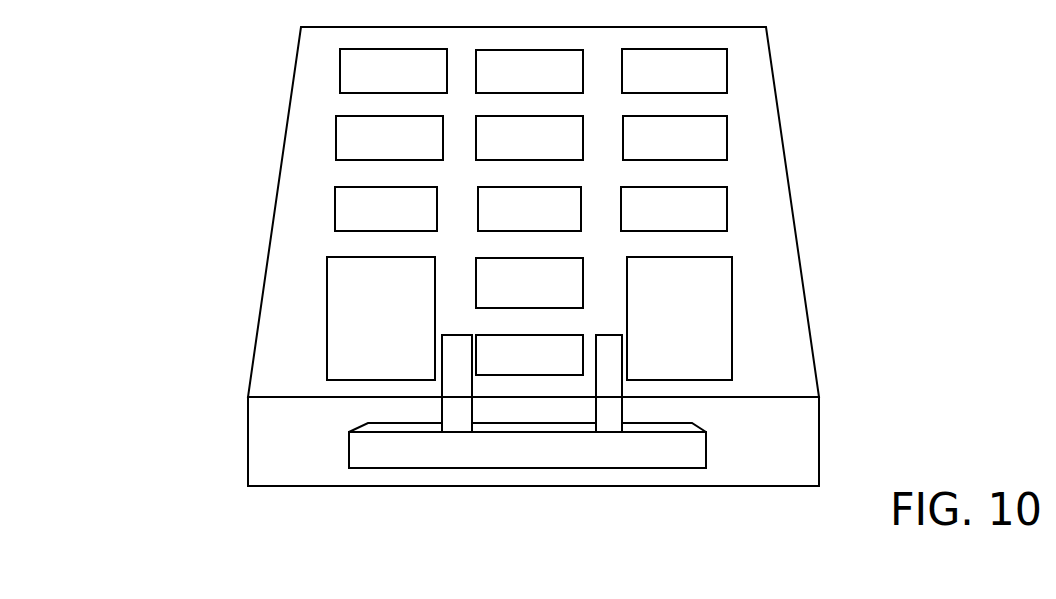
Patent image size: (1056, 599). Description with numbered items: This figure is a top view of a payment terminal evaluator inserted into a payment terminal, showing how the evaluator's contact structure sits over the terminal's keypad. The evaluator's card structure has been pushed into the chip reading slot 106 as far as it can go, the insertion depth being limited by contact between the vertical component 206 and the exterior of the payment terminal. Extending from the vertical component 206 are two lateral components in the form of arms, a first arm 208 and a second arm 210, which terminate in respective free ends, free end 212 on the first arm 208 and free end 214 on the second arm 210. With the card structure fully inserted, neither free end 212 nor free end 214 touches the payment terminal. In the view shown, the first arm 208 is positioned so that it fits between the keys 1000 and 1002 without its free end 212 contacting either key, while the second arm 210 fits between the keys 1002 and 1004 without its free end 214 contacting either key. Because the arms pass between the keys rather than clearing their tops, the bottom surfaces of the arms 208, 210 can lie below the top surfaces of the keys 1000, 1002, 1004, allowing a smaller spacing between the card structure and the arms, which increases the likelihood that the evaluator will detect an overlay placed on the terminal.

The chip reading slot 106 is at (650, 402).
The vertical component 206 is at (404, 448).
The lateral component 208 is at (316, 383).
The lateral component 210 is at (765, 361).
The free end 212 is at (462, 335).
The free end 214 is at (756, 297).
The key 1000 is at (295, 318).
The key 1002 is at (569, 348).
The key 1004 is at (767, 277).